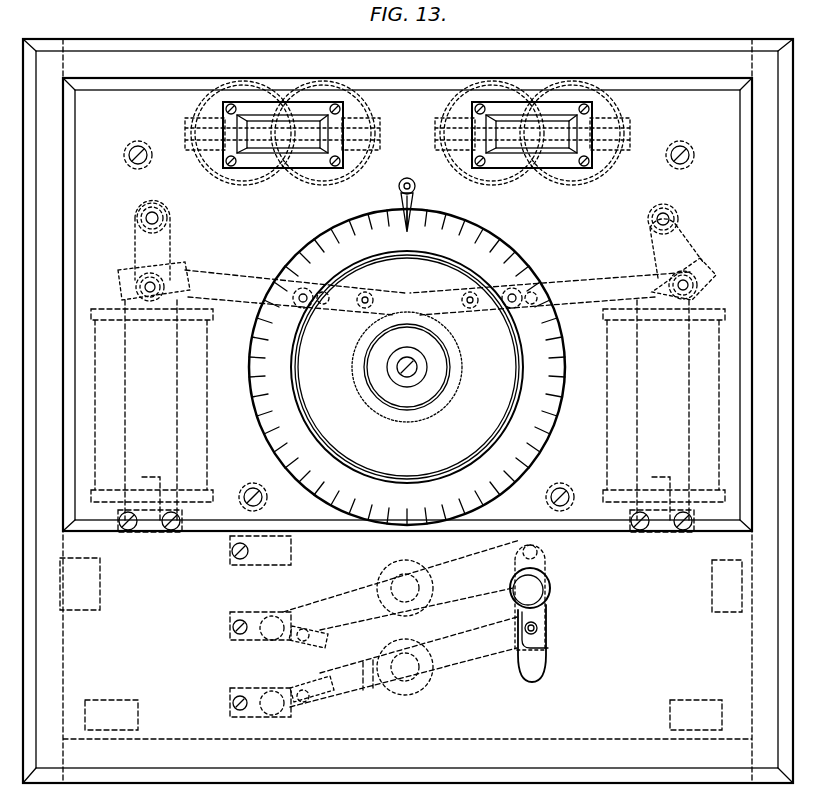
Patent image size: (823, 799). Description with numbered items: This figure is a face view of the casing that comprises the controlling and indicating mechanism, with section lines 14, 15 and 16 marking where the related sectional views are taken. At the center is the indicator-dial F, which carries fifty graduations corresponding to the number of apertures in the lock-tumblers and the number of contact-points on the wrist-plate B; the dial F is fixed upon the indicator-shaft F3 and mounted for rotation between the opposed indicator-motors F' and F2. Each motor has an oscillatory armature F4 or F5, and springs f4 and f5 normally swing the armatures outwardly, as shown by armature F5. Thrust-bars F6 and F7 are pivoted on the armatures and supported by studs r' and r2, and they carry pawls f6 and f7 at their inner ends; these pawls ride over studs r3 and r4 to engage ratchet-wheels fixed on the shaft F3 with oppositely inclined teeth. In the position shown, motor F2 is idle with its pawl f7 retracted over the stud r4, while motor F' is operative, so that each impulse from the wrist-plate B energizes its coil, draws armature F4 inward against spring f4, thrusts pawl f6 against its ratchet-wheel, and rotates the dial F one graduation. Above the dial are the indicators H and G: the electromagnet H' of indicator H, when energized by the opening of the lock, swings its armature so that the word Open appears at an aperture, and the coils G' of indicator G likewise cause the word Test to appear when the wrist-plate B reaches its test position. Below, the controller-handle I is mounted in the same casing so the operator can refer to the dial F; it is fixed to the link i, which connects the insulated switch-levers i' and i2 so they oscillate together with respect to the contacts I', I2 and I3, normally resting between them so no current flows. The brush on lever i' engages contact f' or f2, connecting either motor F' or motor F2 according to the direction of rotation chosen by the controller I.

The section line 14 is at (392, 27).
The section line 15 is at (192, 665).
The section line 16 is at (188, 135).
The wrist-plate B is at (320, 783).
The indicator H is at (282, 140).
The electromagnet H' is at (178, 169).
The indicator G is at (532, 140).
The coils G' is at (625, 169).
The indicator-dial F is at (407, 351).
The indicator-shaft F3 is at (364, 378).
The indicator-motor F' is at (152, 416).
The indicator-motor F2 is at (664, 416).
The oscillatory armature F4 is at (166, 243).
The oscillatory armature F5 is at (655, 246).
The spring f4 is at (168, 218).
The spring f5 is at (650, 220).
The thrust-bar F6 is at (258, 288).
The thrust-bar F7 is at (583, 288).
The pawl f6 is at (385, 314).
The pawl f7 is at (447, 312).
The stud r' is at (303, 311).
The stud r2 is at (501, 311).
The stud r3 is at (376, 312).
The stud r4 is at (445, 312).
The controller-handle I is at (540, 597).
The link i is at (542, 643).
The switch-lever i' is at (403, 662).
The switch-lever i2 is at (401, 585).
The contact I' is at (260, 715).
The contact I2 is at (252, 640).
The contact I3 is at (248, 560).
The contact f' is at (312, 706).
The contact f2 is at (328, 640).